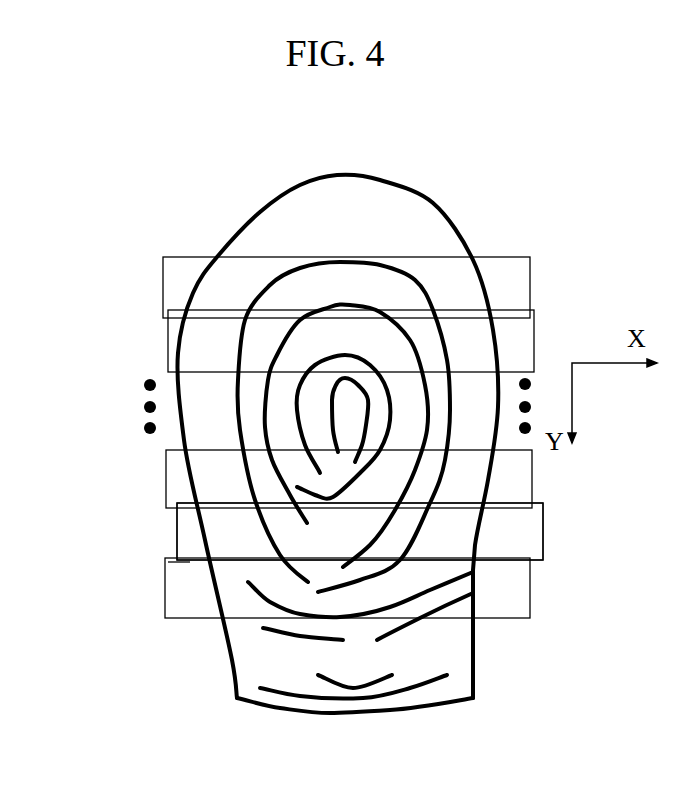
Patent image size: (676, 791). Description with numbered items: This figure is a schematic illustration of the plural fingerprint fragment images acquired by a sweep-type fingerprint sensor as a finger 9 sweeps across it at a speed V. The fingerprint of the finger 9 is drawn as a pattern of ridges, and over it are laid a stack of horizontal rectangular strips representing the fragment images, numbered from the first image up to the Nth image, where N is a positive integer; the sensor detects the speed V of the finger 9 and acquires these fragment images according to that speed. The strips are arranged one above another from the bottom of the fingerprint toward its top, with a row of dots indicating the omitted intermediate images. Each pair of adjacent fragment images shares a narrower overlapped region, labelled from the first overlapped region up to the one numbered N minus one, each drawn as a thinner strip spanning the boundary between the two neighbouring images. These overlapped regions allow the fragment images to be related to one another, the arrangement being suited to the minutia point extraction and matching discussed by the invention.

The finger 9 is at (420, 212).